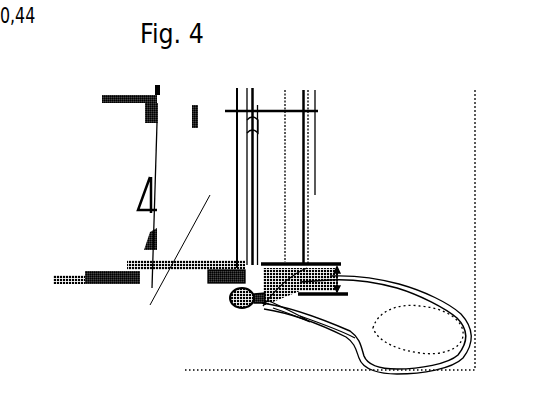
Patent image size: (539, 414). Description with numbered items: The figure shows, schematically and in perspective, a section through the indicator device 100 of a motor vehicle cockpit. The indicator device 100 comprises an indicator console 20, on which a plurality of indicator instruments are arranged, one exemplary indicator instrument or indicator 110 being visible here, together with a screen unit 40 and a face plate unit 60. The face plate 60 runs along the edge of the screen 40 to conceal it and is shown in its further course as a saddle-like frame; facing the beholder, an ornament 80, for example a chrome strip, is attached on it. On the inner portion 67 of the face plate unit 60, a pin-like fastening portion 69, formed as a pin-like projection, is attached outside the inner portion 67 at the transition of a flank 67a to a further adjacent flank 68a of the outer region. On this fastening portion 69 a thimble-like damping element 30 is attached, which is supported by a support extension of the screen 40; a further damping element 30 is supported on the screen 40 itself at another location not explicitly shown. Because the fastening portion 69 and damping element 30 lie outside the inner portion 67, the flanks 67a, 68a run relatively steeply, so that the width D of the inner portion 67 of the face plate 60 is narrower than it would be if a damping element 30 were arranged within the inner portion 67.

The indicator device 100 is at (405, 74).
The indicator instrument 110 is at (160, 141).
The screen unit 40 is at (244, 116).
The face plate unit 60 is at (291, 168).
The ornament 80 is at (314, 274).
The inner portion 67 is at (281, 277).
The width D is at (348, 277).
The damping element 30 is at (239, 318).
The fastening portion 69 is at (264, 310).
The flank 67a is at (290, 300).
The further adjacent flank 68a is at (336, 337).
The indicator console 20 is at (95, 253).